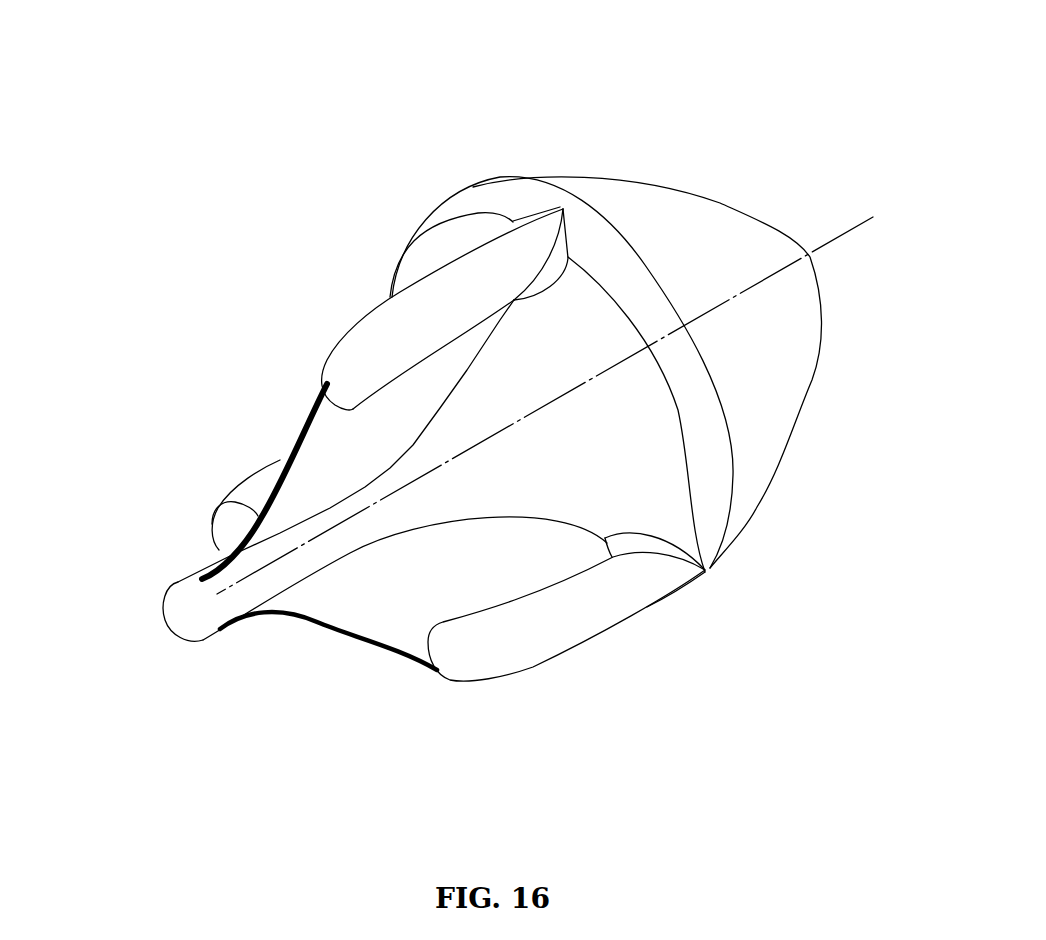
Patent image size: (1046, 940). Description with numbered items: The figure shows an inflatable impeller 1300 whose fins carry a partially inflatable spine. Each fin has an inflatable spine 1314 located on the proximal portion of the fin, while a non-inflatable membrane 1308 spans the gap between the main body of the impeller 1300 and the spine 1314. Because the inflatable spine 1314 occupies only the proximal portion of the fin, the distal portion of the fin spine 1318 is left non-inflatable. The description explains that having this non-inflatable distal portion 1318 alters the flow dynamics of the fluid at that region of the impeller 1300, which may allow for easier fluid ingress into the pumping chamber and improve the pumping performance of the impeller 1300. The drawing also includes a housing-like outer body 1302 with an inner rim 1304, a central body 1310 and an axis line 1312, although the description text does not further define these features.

The impeller 1300 is at (793, 132).
The dome housing 1302 is at (745, 358).
The inner rim 1304 is at (473, 187).
The non-inflatable membrane 1308 is at (455, 560).
The body 1310 is at (197, 622).
The central axis 1312 is at (837, 243).
The inflatable spine 1314 is at (410, 310).
The non-inflatable distal portion of the fin spine 1318 is at (343, 622).